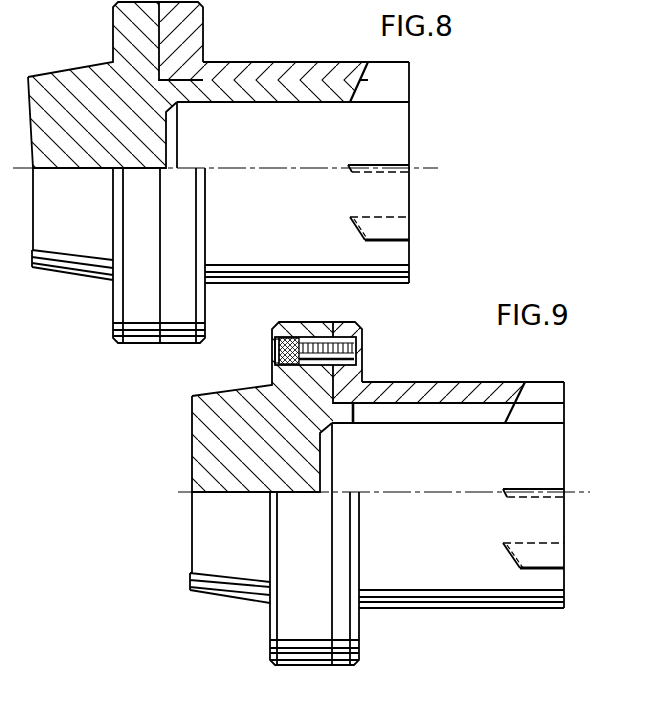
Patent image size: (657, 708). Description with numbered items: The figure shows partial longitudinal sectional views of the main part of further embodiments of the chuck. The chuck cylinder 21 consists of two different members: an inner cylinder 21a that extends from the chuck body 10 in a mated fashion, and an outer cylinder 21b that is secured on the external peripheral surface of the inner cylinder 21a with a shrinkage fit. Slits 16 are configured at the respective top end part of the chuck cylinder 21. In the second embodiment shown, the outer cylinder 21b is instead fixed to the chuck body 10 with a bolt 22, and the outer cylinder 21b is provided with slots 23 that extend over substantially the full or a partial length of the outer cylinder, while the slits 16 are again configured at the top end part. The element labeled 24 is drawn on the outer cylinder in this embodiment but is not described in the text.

In FIG. 8, the chuck body 10 is at (118, 103).
In FIG. 9, the chuck body 10 is at (280, 385).
In FIG. 8, the slits 16 is at (390, 82).
In FIG. 9, the slits 16 is at (535, 411).
In FIG. 8, the chuck cylinder 21 is at (310, 75).
In FIG. 8, the inner cylinder 21a is at (320, 104).
In FIG. 9, the inner cylinder 21a is at (422, 425).
In FIG. 8, the outer cylinder 21b is at (248, 73).
In FIG. 9, the outer cylinder 21b is at (402, 391).
In FIG. 9, the bolt 22 is at (312, 347).
In FIG. 9, the slots 23 is at (480, 415).
In FIG. 9, the tubular insert 24 is at (448, 396).